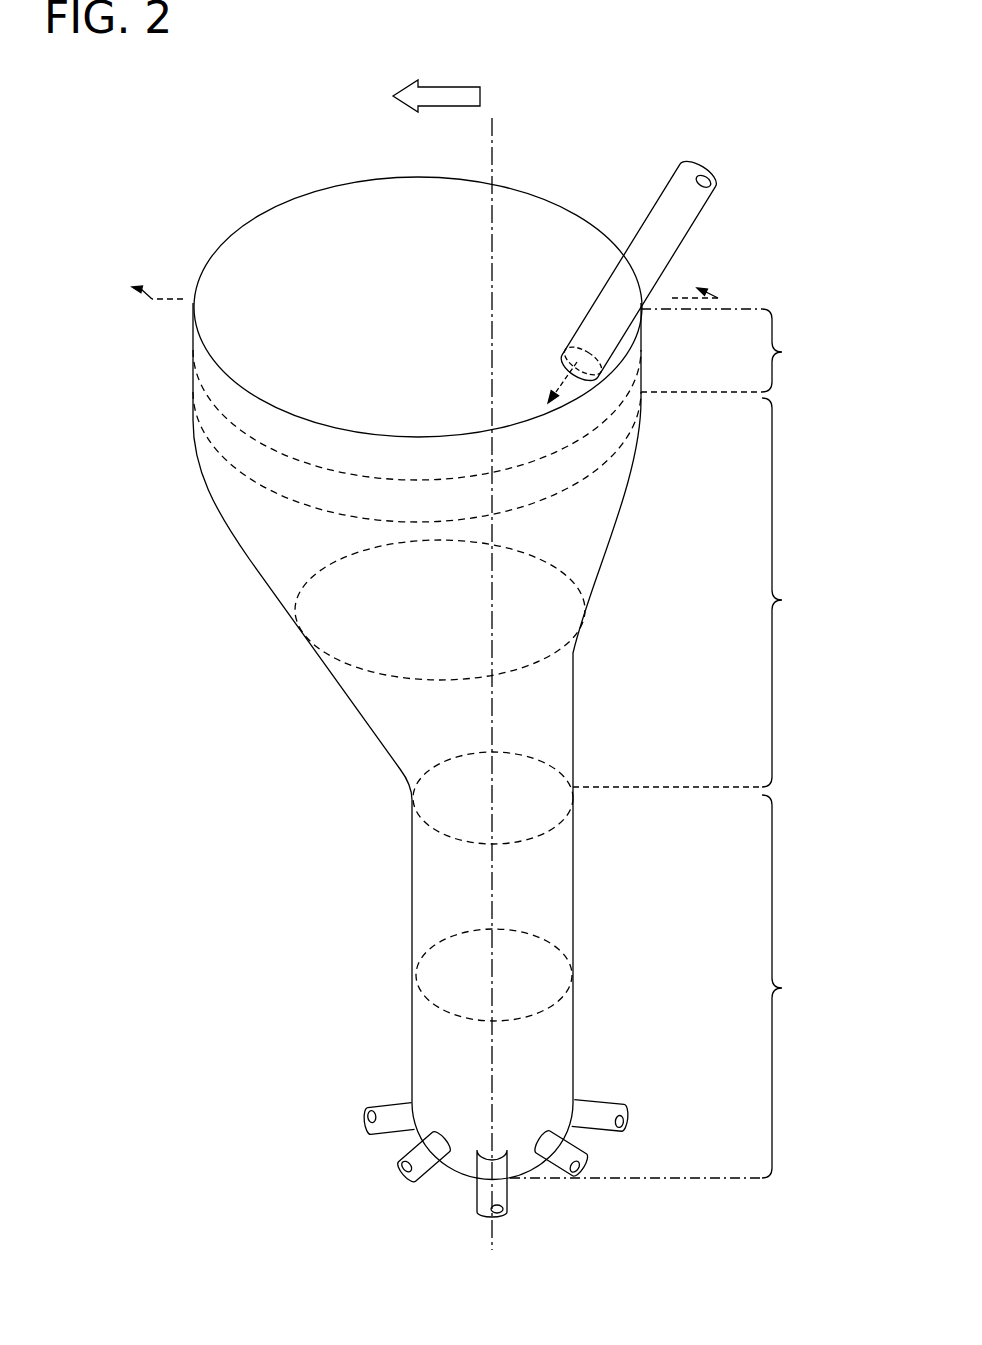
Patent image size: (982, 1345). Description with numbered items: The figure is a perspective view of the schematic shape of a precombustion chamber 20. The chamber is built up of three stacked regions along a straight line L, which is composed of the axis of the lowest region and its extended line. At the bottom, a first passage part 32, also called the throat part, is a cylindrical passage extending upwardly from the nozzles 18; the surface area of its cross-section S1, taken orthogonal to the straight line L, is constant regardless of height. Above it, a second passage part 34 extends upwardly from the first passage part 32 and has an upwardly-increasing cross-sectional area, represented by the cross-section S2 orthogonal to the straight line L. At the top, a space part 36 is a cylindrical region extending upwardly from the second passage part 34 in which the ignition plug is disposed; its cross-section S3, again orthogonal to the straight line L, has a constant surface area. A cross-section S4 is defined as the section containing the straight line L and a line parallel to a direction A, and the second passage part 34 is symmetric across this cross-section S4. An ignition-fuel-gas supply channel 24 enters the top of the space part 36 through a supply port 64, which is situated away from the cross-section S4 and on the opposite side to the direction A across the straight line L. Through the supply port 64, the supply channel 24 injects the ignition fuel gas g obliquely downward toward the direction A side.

The nozzles 18 is at (388, 1127).
The precombustion chamber 20 is at (455, 646).
The ignition-fuel-gas supply channel 24 is at (657, 193).
The first passage part 32 is at (666, 986).
The second passage part 34 is at (696, 592).
The space part 36 is at (732, 350).
The supply port 64 is at (586, 370).
The cross-section S1 is at (552, 1008).
The cross-section S2 is at (563, 652).
The cross-section S3 is at (600, 467).
The cross-section S4 is at (413, 279).
The straight line L is at (500, 155).
The direction A is at (436, 85).
The ignition fuel gas g is at (557, 385).